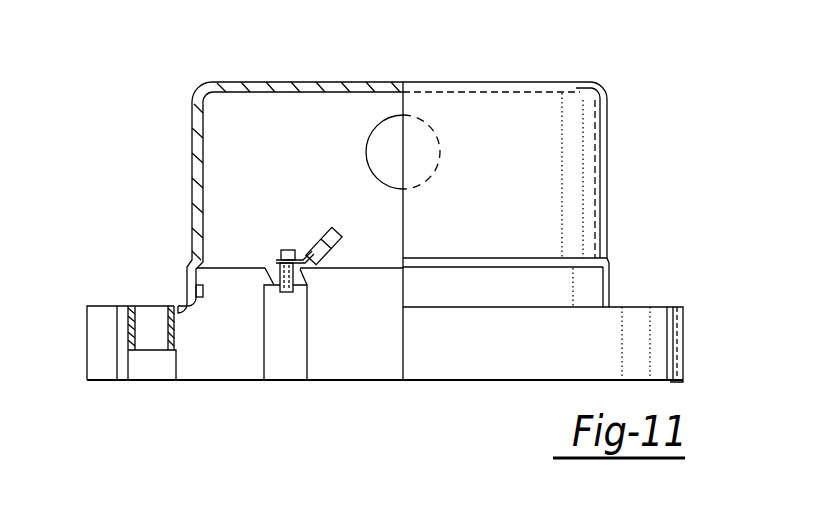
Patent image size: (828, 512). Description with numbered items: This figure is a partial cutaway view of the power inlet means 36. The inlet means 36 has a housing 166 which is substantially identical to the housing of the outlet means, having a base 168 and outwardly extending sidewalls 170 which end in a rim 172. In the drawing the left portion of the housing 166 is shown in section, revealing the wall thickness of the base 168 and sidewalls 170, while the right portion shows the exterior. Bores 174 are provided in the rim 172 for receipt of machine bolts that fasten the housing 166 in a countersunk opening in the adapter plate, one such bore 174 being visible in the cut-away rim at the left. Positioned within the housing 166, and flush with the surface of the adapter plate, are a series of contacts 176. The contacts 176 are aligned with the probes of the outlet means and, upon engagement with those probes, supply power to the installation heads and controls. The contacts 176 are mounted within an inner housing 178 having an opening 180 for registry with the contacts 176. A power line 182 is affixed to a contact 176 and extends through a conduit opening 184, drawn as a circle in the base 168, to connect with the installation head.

The inlet means 36 is at (173, 195).
The housing 166 is at (195, 129).
The base 168 is at (357, 82).
The sidewalls 170 is at (607, 176).
The rim 172 is at (653, 307).
The bores 174 is at (123, 307).
The contacts 176 is at (272, 335).
The inner housing 178 is at (234, 268).
The opening 180 is at (302, 272).
The power line 182 is at (330, 226).
The conduit opening 184 is at (382, 134).